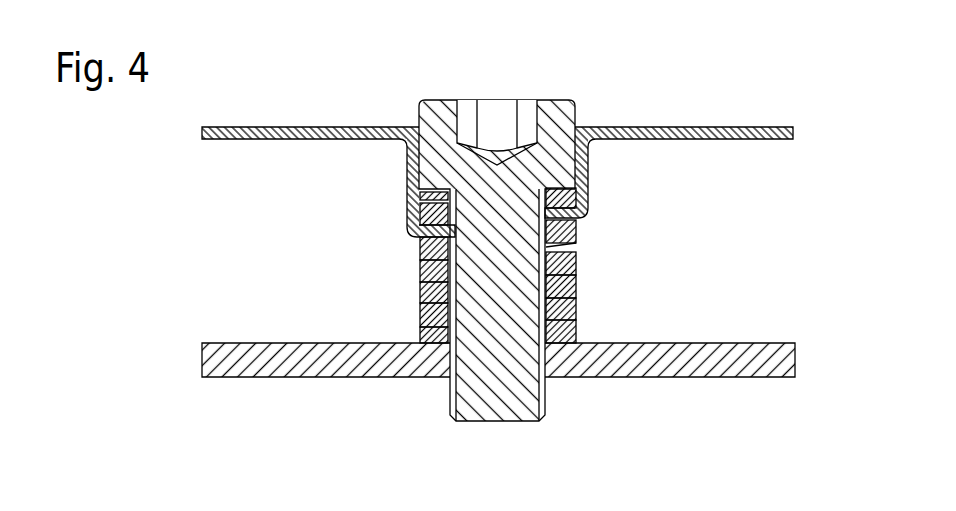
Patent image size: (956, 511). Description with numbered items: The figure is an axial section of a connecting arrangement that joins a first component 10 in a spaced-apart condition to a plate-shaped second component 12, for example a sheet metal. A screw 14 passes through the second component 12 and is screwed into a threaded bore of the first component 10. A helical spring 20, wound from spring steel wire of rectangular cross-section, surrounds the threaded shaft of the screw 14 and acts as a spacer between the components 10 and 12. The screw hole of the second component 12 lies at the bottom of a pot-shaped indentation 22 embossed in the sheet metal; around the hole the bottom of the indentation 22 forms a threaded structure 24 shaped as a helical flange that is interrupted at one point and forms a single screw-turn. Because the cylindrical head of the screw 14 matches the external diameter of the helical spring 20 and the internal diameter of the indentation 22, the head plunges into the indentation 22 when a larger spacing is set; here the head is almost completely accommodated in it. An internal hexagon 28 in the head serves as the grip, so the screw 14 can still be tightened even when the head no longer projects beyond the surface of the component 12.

The first component 10 is at (215, 363).
The second component 12 is at (740, 128).
The screw 14 is at (449, 231).
The helical spring 20 is at (577, 289).
The pot-shaped indentation 22 is at (406, 163).
The threaded structure 24 is at (420, 240).
The internal hexagon 28 is at (535, 114).